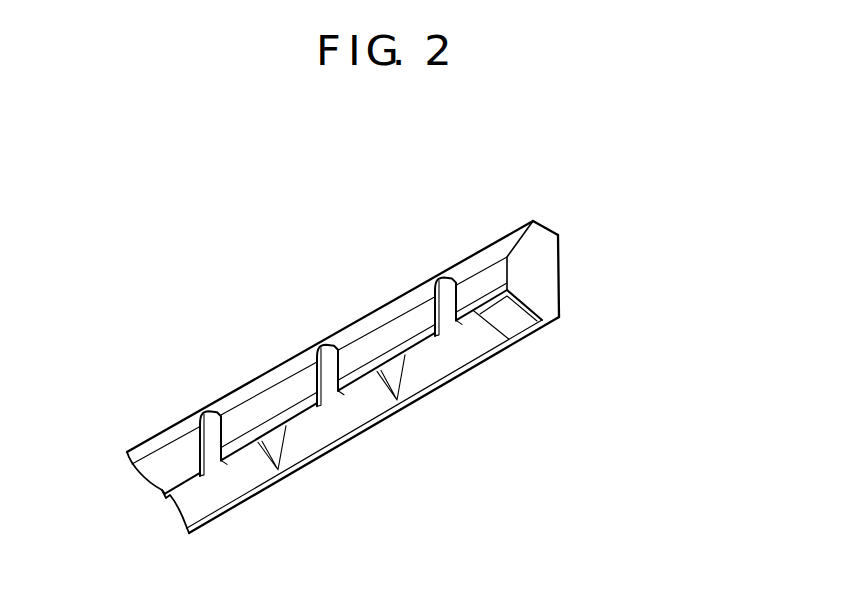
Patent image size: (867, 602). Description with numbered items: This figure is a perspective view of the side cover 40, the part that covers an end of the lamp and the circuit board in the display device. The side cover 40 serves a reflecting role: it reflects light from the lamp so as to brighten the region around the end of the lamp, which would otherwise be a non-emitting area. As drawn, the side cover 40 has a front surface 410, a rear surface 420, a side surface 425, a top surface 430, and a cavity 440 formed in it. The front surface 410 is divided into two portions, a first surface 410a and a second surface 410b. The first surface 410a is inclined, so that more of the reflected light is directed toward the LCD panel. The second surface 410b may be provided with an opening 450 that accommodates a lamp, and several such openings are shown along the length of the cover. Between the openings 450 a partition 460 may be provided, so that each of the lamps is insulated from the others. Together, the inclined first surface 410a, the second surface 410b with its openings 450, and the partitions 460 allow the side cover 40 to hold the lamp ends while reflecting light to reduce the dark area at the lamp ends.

The side cover 40 is at (461, 250).
The front surface 410 is at (272, 297).
The first surface 410a is at (300, 357).
The second surface 410b is at (253, 413).
The rear surface 420 is at (254, 494).
The side surface 425 is at (548, 270).
The top surface 430 is at (547, 225).
The cavity 440 is at (497, 325).
The opening 450 is at (447, 320).
The partition 460 is at (283, 448).